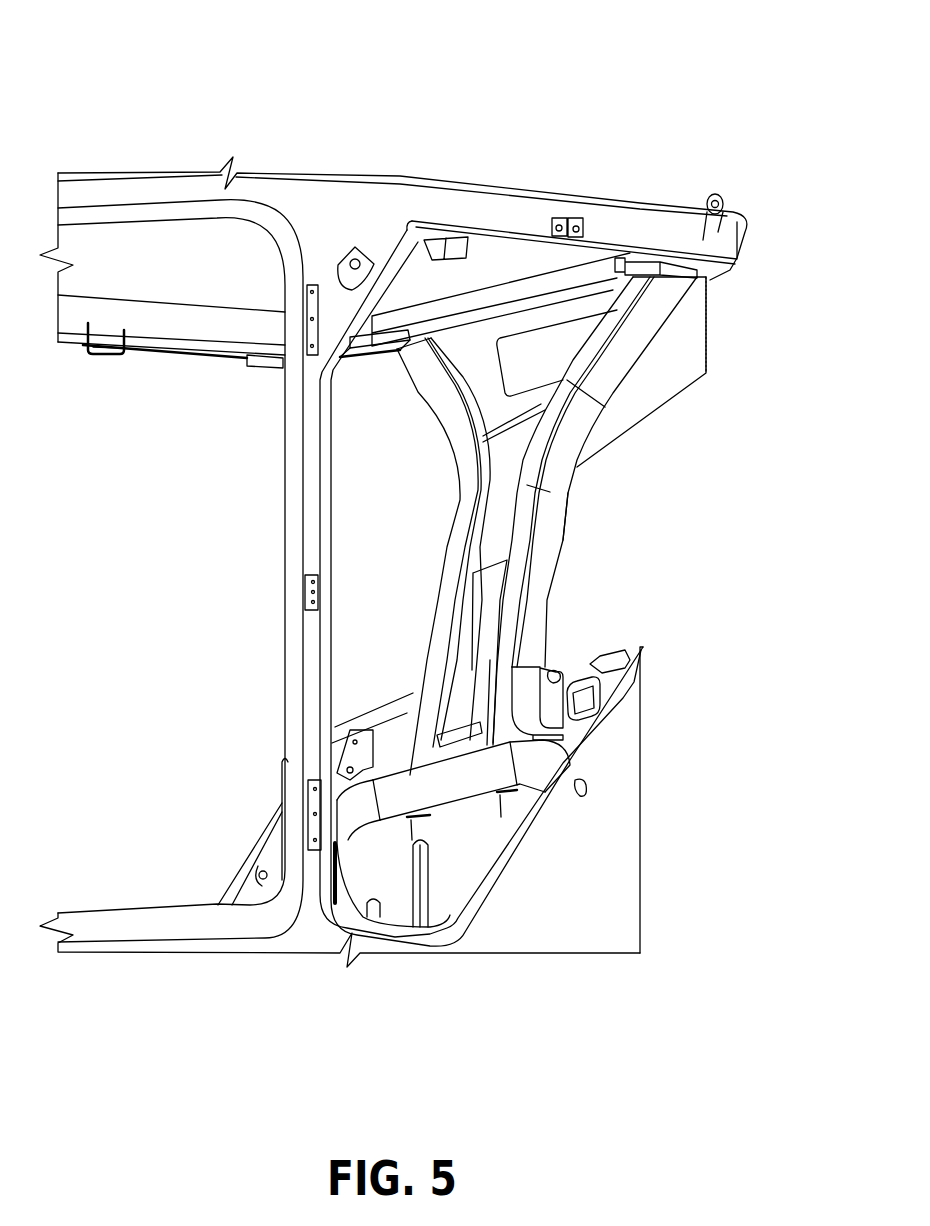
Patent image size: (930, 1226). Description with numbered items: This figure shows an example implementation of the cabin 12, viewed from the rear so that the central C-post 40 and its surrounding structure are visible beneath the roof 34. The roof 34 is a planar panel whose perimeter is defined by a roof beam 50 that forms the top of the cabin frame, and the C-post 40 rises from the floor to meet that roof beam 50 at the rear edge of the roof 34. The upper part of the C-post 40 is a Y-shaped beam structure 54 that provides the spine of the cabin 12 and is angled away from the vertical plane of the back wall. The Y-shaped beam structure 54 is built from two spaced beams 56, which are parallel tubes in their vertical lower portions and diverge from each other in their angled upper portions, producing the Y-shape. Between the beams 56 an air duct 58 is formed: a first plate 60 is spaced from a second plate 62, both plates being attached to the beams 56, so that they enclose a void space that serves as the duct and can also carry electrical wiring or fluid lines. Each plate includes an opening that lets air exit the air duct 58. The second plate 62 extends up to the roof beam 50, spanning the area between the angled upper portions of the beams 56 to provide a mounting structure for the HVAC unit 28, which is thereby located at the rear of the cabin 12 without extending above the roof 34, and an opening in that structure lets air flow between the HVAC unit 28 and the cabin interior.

The cabin 12 is at (283, 106).
The HVAC unit 28 is at (682, 360).
The roof 34 is at (625, 193).
The C-post 40 is at (435, 672).
The roof beam 50 is at (500, 295).
The Y-shaped beam structure 54 is at (537, 458).
The beams 56 is at (453, 558).
The air duct 58 is at (495, 583).
The first plate 60 is at (500, 503).
The second plate 62 is at (483, 367).